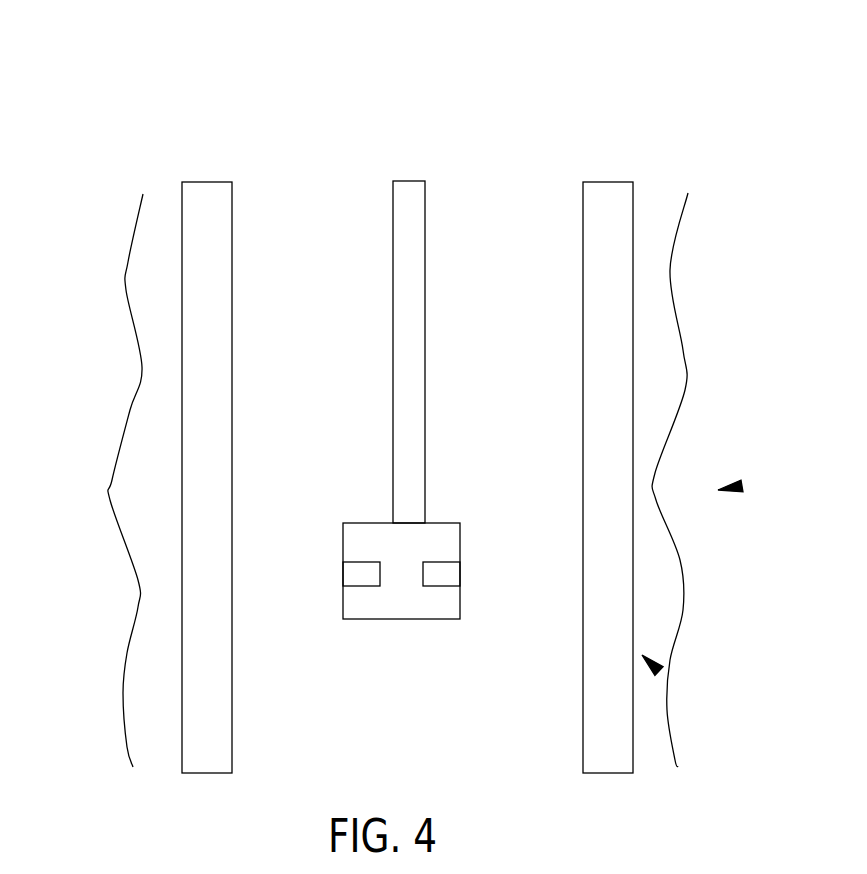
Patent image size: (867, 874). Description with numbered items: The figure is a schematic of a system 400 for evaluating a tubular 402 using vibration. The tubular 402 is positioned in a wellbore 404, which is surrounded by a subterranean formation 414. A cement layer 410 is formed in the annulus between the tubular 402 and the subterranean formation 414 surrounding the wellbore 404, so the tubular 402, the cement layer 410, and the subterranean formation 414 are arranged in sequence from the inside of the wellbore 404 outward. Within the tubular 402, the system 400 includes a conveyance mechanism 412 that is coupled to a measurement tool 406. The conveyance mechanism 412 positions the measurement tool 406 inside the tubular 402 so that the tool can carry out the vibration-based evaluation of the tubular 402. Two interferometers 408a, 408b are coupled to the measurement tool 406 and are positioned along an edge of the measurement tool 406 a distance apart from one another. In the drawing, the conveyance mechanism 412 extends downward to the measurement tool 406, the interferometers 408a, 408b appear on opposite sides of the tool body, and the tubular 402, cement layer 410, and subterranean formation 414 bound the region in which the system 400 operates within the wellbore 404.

The system 400 is at (110, 108).
The tubular 402 is at (607, 180).
The wellbore 404 is at (680, 329).
The measurement tool 406 is at (360, 535).
The interferometer 408a is at (355, 575).
The interferometer 408b is at (450, 575).
The cement layer 410 is at (659, 671).
The conveyance mechanism 412 is at (407, 180).
The subterranean formation 414 is at (742, 486).